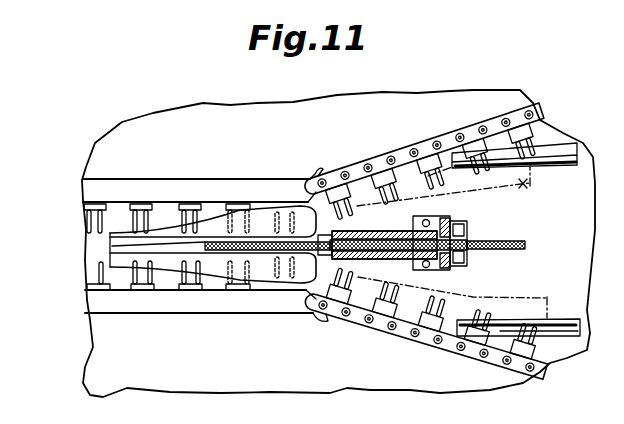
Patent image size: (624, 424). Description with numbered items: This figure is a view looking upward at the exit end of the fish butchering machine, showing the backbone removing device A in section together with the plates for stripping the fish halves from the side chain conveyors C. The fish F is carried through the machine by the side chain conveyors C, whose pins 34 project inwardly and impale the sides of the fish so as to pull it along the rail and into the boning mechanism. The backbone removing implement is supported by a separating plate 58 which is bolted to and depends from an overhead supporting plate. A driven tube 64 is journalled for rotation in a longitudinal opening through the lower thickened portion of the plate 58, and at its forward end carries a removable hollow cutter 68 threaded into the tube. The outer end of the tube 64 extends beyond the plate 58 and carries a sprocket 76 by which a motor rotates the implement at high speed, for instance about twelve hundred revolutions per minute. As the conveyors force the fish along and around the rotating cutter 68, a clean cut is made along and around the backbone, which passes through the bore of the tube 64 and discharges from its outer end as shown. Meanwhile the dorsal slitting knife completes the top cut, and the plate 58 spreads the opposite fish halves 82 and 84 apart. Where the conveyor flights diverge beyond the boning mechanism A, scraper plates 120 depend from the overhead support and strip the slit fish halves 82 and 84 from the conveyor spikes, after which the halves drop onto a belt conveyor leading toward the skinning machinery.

The hollow cutter 68 is at (327, 236).
The separating plate 58 is at (378, 242).
The driven tube 64 is at (468, 231).
The sprocket 76 is at (456, 223).
The fish half 82 is at (524, 188).
The fish half 84 is at (512, 304).
The scraper plates 120 is at (548, 165).
The pins 34 is at (357, 303).
The side chain conveyors C is at (378, 158).
The backbone removing device A is at (341, 271).
The fish F is at (177, 262).